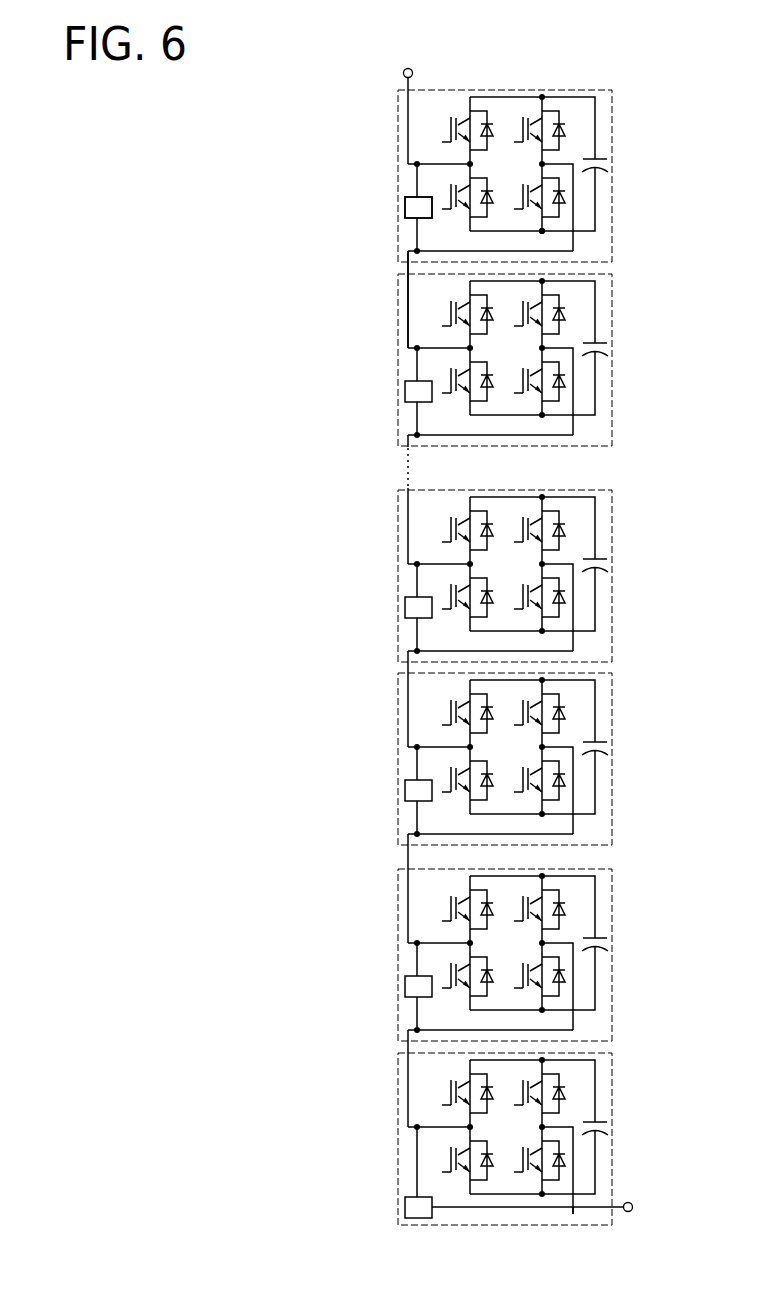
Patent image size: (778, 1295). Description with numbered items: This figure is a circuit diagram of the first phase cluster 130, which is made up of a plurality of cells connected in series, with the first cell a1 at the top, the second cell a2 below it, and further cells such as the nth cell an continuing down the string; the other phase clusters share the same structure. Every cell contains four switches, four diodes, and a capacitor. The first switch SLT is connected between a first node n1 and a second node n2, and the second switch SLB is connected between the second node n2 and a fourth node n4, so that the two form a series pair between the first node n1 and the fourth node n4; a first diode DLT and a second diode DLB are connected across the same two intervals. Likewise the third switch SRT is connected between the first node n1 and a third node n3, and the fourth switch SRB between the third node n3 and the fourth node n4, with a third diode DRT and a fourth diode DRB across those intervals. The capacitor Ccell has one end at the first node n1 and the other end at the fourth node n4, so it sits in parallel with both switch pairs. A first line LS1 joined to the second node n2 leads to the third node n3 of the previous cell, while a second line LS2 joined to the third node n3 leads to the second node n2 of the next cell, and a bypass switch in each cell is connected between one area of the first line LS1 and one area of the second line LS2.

The first phase cluster 130 is at (340, 49).
The first cell a1 is at (613, 102).
The second cell a2 is at (614, 305).
The nth cell an is at (613, 703).
The first switch SLT is at (446, 111).
The first diode DLT is at (479, 109).
The third switch SRT is at (517, 121).
The third diode DRT is at (566, 110).
The second switch SLB is at (432, 189).
The second diode DLB is at (476, 194).
The fourth switch SRB is at (514, 203).
The fourth diode DRB is at (561, 196).
The first node n1 is at (542, 96).
The second node n2 is at (468, 163).
The third node n3 is at (544, 164).
The fourth node n4 is at (544, 232).
The capacitor Ccell is at (608, 150).
The first line LS1 is at (407, 123).
The second line LS2 is at (407, 300).